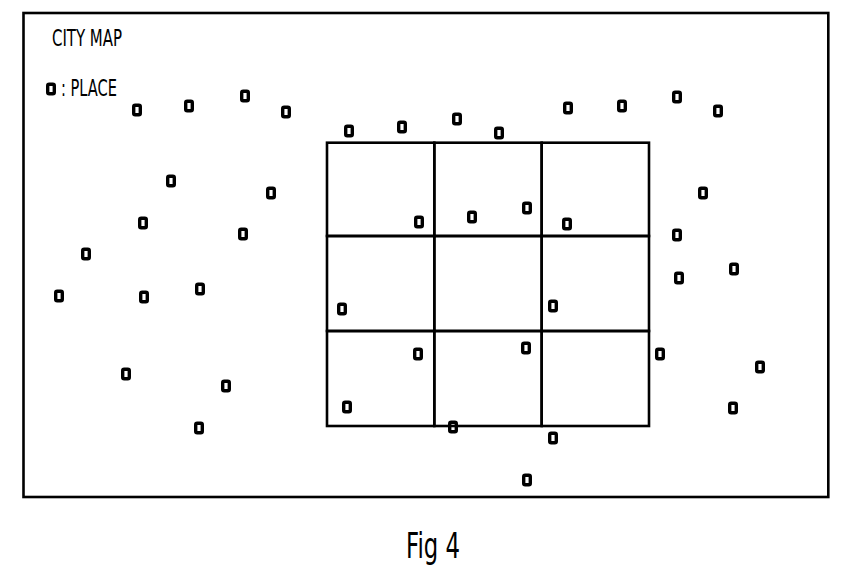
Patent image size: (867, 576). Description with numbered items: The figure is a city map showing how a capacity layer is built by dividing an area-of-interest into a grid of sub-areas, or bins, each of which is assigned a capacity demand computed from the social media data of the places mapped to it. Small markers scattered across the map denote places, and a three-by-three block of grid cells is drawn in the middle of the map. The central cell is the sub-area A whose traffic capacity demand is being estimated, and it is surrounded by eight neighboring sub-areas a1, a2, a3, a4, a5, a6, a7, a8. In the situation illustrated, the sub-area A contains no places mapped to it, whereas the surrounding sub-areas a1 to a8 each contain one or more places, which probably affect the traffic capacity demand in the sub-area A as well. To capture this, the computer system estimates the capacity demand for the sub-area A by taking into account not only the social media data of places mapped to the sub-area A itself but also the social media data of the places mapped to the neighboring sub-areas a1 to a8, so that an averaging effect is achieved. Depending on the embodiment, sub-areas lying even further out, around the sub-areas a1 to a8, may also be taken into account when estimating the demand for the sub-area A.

The sub-area A is at (487, 283).
The sub-area a1 is at (380, 189).
The sub-area a2 is at (380, 283).
The sub-area a3 is at (380, 378).
The sub-area a4 is at (487, 189).
The sub-area a5 is at (487, 378).
The sub-area a6 is at (595, 189).
The sub-area a7 is at (595, 283).
The sub-area a8 is at (595, 378).